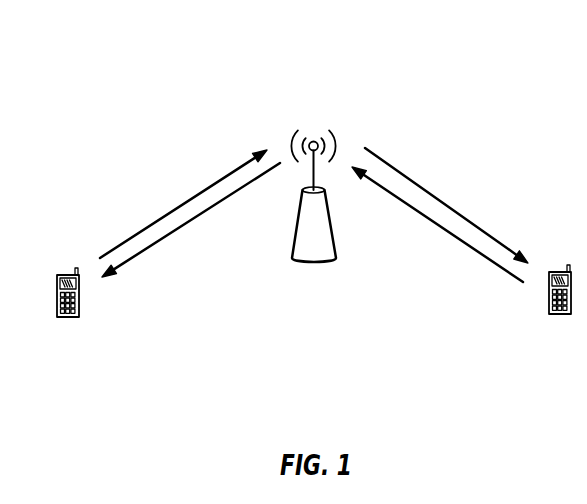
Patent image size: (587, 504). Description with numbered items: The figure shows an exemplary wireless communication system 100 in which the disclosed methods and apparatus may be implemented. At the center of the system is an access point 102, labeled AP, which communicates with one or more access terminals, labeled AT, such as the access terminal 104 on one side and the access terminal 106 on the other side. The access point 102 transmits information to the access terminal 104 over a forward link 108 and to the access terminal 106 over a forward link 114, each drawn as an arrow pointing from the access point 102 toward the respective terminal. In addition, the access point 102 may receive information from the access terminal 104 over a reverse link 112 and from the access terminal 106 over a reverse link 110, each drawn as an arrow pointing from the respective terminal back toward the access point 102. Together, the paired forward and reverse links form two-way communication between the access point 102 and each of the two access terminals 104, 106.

The wireless communication system 100 is at (158, 102).
The access point 102 is at (291, 244).
The access terminal 104 is at (63, 275).
The access terminal 106 is at (562, 270).
The forward link 108 is at (168, 235).
The reverse link 110 is at (455, 237).
The reverse link 112 is at (165, 217).
The forward link 114 is at (458, 212).